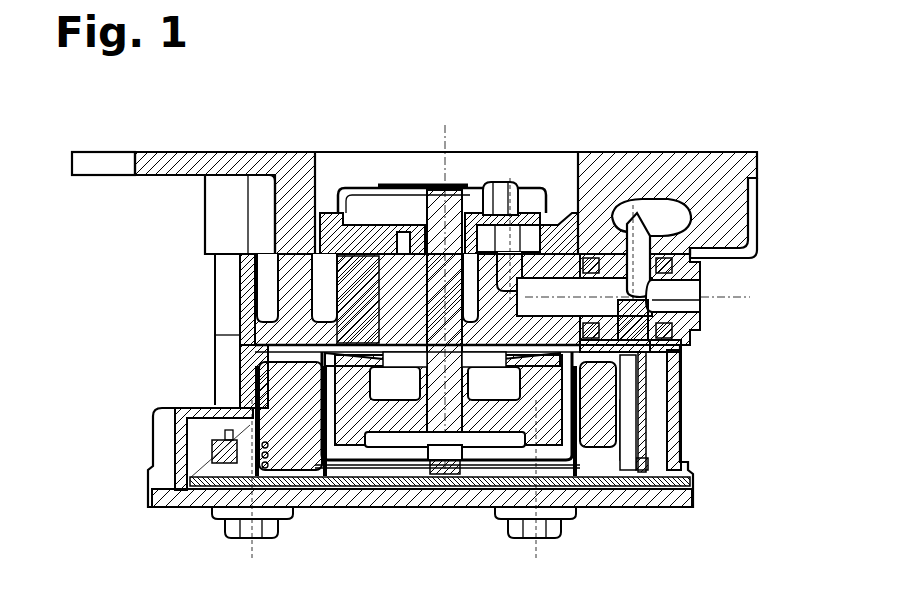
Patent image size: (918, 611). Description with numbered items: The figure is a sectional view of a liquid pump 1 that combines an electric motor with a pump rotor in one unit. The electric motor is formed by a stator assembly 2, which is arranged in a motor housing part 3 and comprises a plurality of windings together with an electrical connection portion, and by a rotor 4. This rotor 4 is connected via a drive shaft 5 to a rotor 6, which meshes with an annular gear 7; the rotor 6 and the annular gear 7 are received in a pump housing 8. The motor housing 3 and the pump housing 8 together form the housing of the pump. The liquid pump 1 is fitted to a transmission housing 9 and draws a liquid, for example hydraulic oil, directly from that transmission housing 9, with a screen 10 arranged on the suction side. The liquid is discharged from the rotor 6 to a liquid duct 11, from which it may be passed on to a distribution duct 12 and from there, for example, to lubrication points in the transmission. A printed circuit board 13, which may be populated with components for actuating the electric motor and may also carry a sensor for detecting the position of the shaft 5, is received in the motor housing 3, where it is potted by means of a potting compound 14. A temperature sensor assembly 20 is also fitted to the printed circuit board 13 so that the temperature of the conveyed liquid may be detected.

The liquid pump 1 is at (158, 534).
The stator assembly 2 is at (287, 383).
The motor housing part 3 is at (682, 363).
The rotor 4 is at (353, 425).
The drive shaft 5 is at (455, 437).
The rotor 6 is at (420, 247).
The annular gear 7 is at (393, 268).
The pump housing 8 is at (353, 293).
The transmission housing 9 is at (652, 173).
The screen 10 is at (452, 186).
The liquid duct 11 is at (643, 288).
The distribution duct 12 is at (663, 215).
The printed circuit board 13 is at (383, 488).
The potting compound 14 is at (607, 497).
The temperature sensor assembly 20 is at (612, 250).